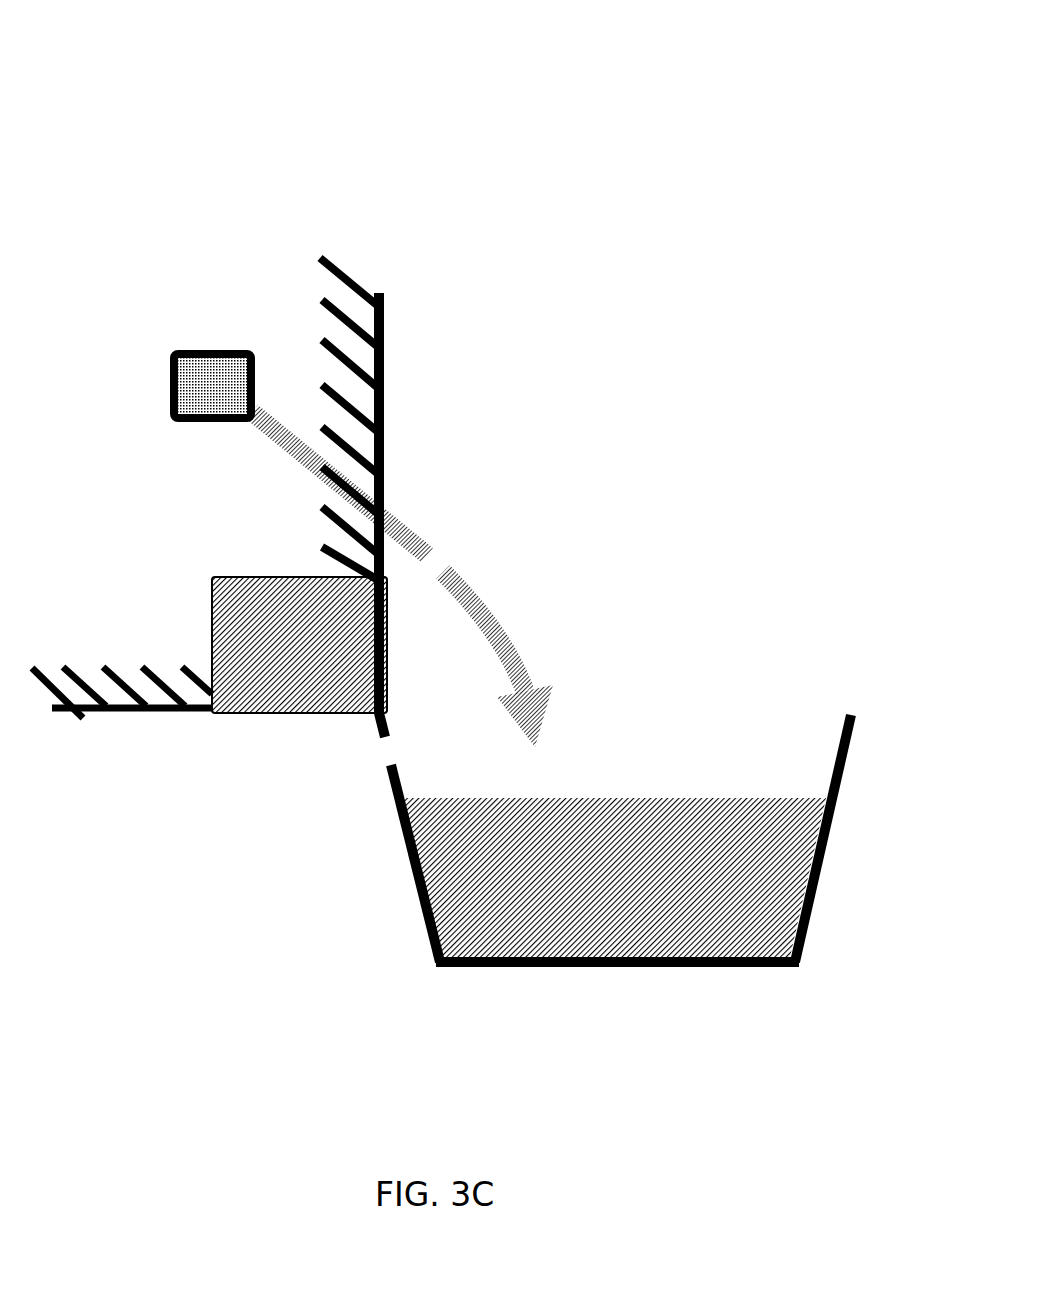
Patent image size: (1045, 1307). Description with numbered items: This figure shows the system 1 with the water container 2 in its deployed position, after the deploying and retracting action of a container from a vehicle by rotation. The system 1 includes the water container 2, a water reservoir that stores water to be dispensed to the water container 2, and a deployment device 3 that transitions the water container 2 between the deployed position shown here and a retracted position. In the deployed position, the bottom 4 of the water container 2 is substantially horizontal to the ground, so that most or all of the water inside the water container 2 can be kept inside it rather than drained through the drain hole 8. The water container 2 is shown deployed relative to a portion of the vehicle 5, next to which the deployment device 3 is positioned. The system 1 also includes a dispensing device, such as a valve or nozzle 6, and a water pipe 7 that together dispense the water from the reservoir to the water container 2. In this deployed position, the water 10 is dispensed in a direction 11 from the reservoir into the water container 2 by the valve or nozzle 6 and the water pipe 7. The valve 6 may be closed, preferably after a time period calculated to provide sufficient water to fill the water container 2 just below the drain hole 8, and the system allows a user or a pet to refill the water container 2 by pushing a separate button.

The system 1 is at (196, 128).
The water container 2 is at (843, 757).
The deployment device 3 is at (212, 582).
The bottom 4 is at (670, 965).
The vehicle 5 is at (385, 322).
The nozzle 6 is at (170, 352).
The water pipe 7 is at (300, 460).
The drain hole 8 is at (387, 745).
The water 10 is at (598, 847).
The direction 11 is at (463, 577).